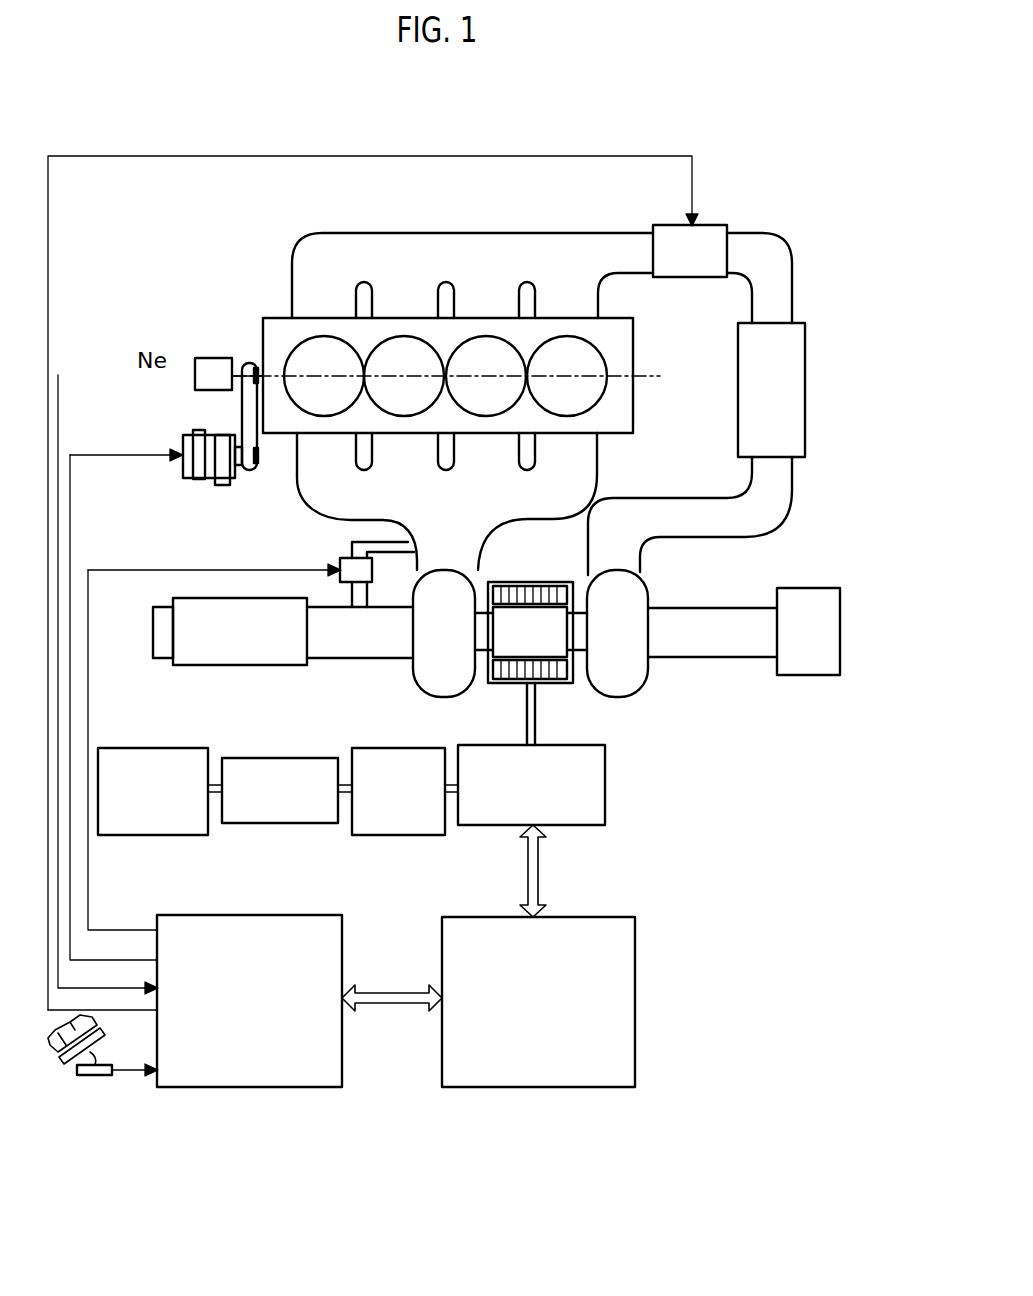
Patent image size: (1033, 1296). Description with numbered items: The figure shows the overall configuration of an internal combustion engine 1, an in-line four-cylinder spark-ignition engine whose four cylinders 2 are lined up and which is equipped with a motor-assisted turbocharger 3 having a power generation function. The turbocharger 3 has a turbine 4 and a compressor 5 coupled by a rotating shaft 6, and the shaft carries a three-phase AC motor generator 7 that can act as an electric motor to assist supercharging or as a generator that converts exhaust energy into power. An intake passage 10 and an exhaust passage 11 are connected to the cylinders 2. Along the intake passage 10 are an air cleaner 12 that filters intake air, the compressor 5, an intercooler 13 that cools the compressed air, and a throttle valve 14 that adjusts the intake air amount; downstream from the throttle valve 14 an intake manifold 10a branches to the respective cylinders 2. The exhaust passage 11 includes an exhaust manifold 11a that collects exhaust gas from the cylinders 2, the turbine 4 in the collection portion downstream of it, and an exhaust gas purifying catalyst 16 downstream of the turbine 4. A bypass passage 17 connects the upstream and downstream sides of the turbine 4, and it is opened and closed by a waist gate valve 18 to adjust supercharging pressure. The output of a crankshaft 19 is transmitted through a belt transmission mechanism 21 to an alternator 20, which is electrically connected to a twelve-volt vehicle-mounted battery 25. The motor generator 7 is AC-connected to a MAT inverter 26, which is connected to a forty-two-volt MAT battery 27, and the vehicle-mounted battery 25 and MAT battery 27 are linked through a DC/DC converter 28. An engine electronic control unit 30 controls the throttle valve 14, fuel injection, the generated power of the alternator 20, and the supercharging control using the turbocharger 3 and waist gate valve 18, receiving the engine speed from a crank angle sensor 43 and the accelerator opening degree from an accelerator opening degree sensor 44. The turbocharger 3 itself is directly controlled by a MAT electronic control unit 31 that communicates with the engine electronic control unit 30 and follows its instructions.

The internal combustion engine 1 is at (797, 152).
The cylinders 2 is at (448, 376).
The motor-assisted turbocharger 3 is at (573, 643).
The turbine 4 is at (435, 651).
The compressor 5 is at (617, 660).
The rotating shaft 6 is at (531, 588).
The motor generator 7 is at (530, 603).
The intake passage 10 is at (728, 387).
The intake manifold 10a is at (472, 243).
The exhaust passage 11 is at (360, 673).
The exhaust manifold 11a is at (496, 501).
The air cleaner 12 is at (744, 602).
The intercooler 13 is at (808, 390).
The throttle valve 14 is at (696, 216).
The exhaust gas purifying catalyst 16 is at (230, 657).
The bypass passage 17 is at (383, 574).
The waist gate valve 18 is at (325, 542).
The crankshaft 19 is at (460, 340).
The alternator 20 is at (194, 434).
The belt transmission mechanism 21 is at (242, 375).
The vehicle-mounted battery 25 is at (160, 763).
The MAT inverter 26 is at (575, 800).
The MAT battery 27 is at (405, 764).
The DC/DC converter 28 is at (287, 760).
The engine electronic control unit 30 is at (299, 971).
The MAT electronic control unit 31 is at (538, 973).
The crank angle sensor 43 is at (207, 340).
The accelerator opening degree sensor 44 is at (103, 1080).